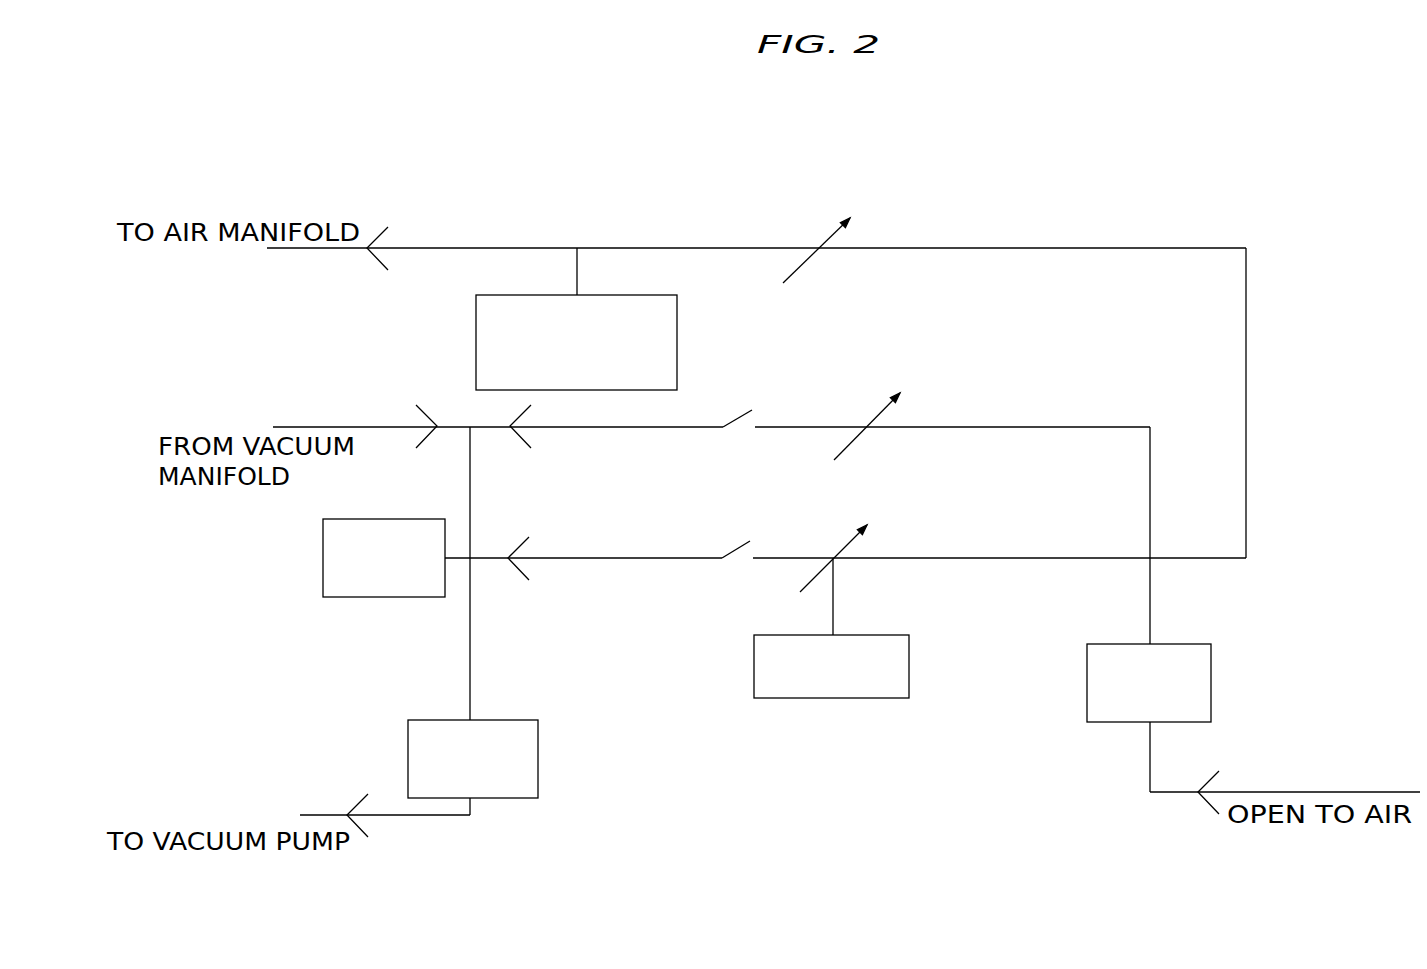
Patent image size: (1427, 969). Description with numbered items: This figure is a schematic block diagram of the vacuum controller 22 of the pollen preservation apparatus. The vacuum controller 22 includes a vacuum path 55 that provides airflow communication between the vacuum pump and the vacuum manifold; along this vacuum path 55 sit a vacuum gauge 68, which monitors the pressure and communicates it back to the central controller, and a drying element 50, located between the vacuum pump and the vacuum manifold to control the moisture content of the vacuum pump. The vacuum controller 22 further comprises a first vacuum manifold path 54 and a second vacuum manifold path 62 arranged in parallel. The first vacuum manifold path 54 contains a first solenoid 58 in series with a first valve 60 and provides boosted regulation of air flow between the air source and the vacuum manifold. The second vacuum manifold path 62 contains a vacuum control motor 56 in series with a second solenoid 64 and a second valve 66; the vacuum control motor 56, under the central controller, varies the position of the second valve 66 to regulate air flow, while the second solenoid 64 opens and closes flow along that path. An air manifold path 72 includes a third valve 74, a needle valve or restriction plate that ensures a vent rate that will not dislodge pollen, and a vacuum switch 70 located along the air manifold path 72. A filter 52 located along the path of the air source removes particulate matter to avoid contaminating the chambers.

The vacuum controller 22 is at (1268, 150).
The drying element 50 is at (538, 767).
The filter 52 is at (1211, 681).
The first vacuum manifold path 54 is at (1020, 413).
The vacuum path 55 is at (478, 655).
The vacuum control motor 56 is at (780, 698).
The first solenoid 58 is at (723, 425).
The first valve 60 is at (865, 425).
The second vacuum manifold path 62 is at (1017, 548).
The second solenoid 64 is at (722, 556).
The second valve 66 is at (833, 556).
The vacuum gauge 68 is at (323, 560).
The vacuum switch 70 is at (476, 352).
The air manifold path 72 is at (1022, 235).
The third valve 74 is at (810, 242).